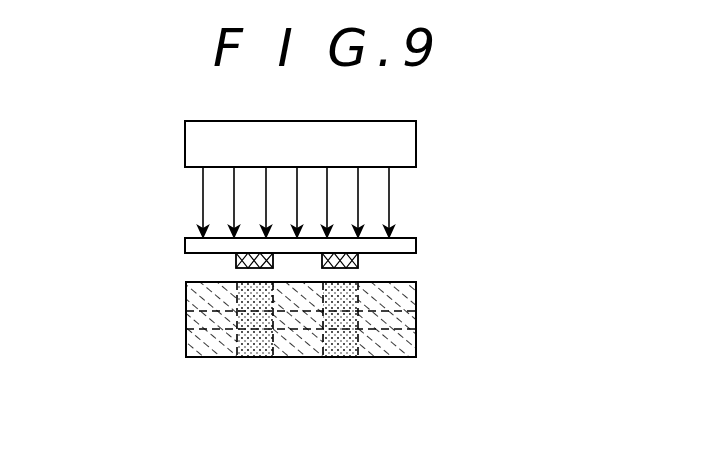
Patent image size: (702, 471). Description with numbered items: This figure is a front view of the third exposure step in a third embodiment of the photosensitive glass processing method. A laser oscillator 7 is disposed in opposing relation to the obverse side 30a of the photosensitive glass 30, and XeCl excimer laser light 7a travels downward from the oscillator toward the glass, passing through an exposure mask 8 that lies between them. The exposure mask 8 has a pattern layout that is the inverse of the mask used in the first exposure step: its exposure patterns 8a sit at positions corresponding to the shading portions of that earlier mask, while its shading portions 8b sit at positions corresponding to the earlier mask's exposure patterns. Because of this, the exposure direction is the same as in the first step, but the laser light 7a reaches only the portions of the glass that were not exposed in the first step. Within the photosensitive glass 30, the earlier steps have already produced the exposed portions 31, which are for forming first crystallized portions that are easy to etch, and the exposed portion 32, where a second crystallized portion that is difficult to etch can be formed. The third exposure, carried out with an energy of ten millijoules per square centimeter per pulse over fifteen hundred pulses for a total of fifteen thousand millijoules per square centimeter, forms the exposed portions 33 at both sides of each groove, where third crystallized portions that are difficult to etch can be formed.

The laser oscillator 7 is at (416, 143).
The XeCl excimer laser light 7a is at (400, 206).
The exposure mask 8 is at (369, 276).
The exposure patterns 8a is at (408, 254).
The shading portions 8b is at (358, 263).
The photosensitive glass 30 is at (294, 360).
The obverse side 30a is at (201, 282).
The exposed portions 31 is at (258, 357).
The exposed portion 32 is at (418, 322).
The exposed portions 33 is at (203, 357).